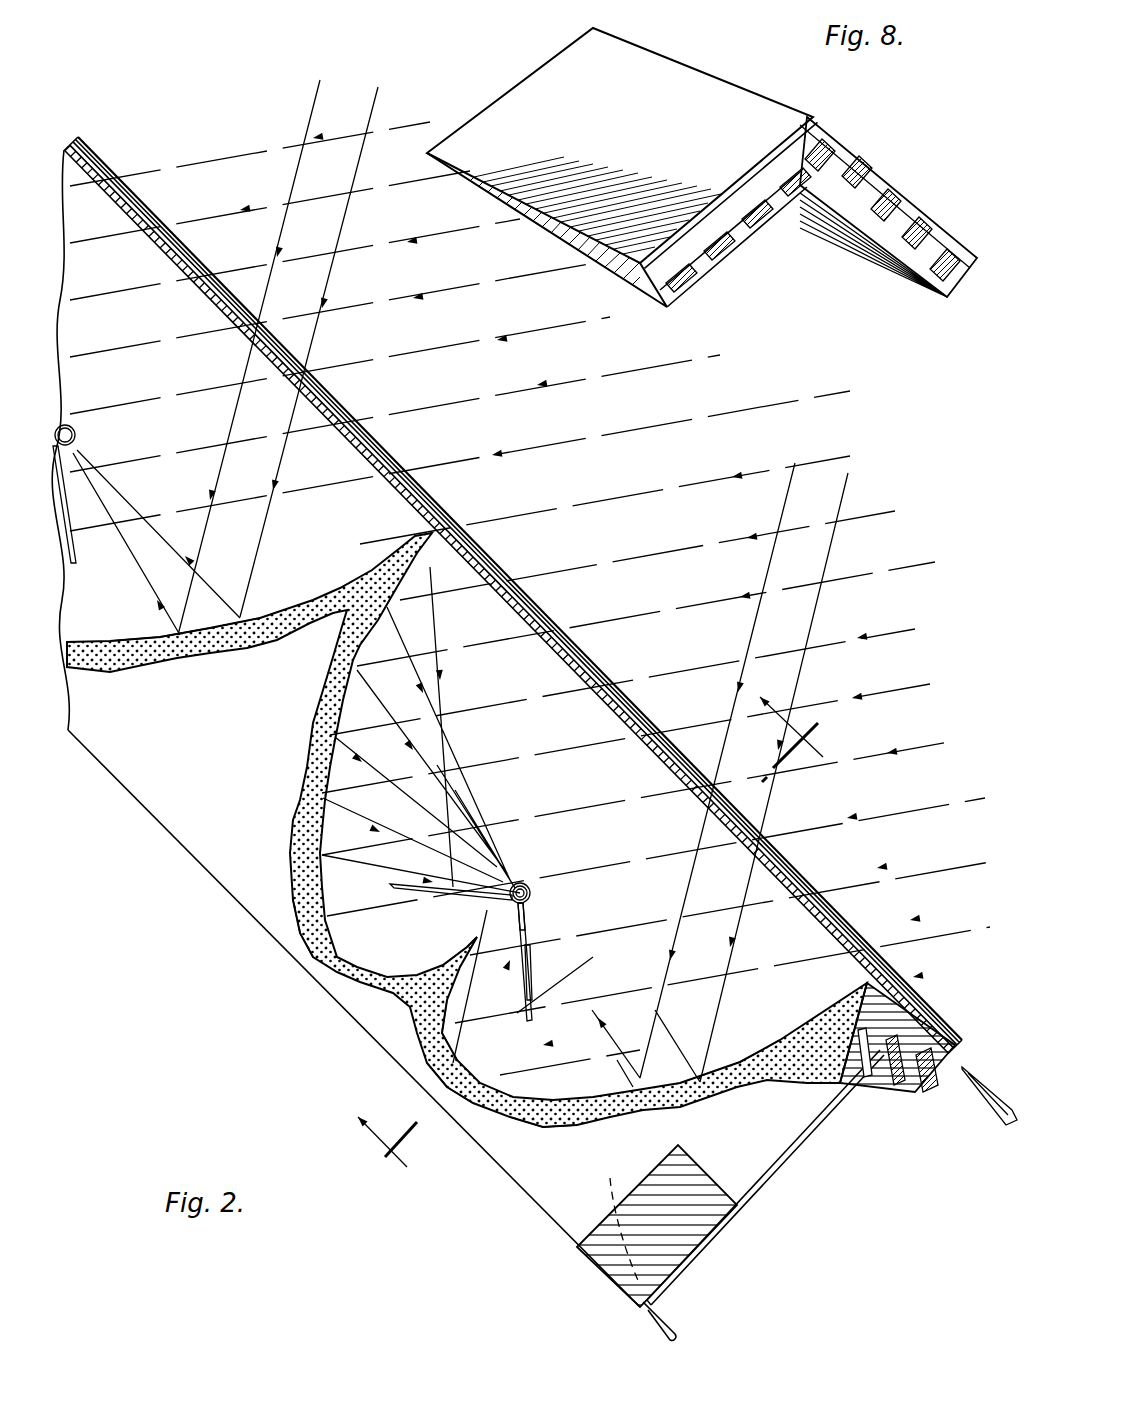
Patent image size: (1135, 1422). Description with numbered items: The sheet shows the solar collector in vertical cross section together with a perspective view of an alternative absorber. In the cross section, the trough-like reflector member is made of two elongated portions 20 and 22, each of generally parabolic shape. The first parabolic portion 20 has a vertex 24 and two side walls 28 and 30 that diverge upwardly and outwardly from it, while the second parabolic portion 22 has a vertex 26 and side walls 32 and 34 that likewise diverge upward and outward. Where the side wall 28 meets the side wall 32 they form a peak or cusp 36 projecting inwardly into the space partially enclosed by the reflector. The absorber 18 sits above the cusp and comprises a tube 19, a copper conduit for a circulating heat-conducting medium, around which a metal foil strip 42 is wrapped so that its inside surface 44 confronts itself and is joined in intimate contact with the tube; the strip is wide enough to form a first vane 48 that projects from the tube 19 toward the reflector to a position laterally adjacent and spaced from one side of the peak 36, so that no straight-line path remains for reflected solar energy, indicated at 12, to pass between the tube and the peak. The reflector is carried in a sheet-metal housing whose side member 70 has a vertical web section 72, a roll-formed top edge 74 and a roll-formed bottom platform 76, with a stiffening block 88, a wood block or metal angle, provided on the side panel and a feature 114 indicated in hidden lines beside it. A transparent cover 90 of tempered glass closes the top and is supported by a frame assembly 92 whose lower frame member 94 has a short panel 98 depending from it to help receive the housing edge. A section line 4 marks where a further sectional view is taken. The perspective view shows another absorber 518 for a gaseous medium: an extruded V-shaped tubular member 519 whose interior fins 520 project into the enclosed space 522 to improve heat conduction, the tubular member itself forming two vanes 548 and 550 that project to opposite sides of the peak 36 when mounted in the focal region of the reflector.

In FIG. 2, the incident light rays 12 is at (200, 418).
In FIG. 2, the transparent cover 90 is at (547, 645).
In FIG. 2, the side wall 34 is at (318, 708).
In FIG. 2, the second parabolic portion 22 is at (313, 781).
In FIG. 2, the vertex 26 is at (330, 952).
In FIG. 2, the side wall 32 is at (420, 965).
In FIG. 2, the side wall 28 is at (442, 1040).
In FIG. 2, the vertex 24 is at (452, 1090).
In FIG. 2, the first parabolic portion 20 is at (553, 1108).
In FIG. 2, the side wall 30 is at (725, 1057).
In FIG. 2, the absorber 18 is at (533, 891).
In FIG. 2, the tube 19 is at (530, 882).
In FIG. 2, the peak or cusp 36 is at (473, 933).
In FIG. 2, the inside surface 44 is at (540, 903).
In FIG. 2, the metal foil strip 42 is at (532, 970).
In FIG. 2, the first vane 48 is at (530, 1012).
In FIG. 2, the section line 4 is at (580, 920).
In FIG. 2, the stiffening block 88 is at (700, 1163).
In FIG. 2, the hidden channel 114 is at (617, 1217).
In FIG. 2, the vertical web section 72 is at (793, 1157).
In FIG. 2, the side member 70 is at (757, 1197).
In FIG. 2, the roll-formed bottom platform 76 is at (610, 1283).
In FIG. 2, the short panel 98 is at (850, 1017).
In FIG. 2, the roll-formed top edge 74 is at (863, 1050).
In FIG. 2, the lower frame member 94 is at (903, 1060).
In FIG. 2, the frame assembly 92 is at (933, 1087).
In FIG. 8, the absorber 518 is at (870, 132).
In FIG. 8, the V-shaped tubular member 519 is at (818, 125).
In FIG. 8, the fins 520 is at (917, 200).
In FIG. 8, the enclosed space 522 is at (937, 233).
In FIG. 8, the vane 550 is at (713, 263).
In FIG. 8, the vane 548 is at (910, 263).